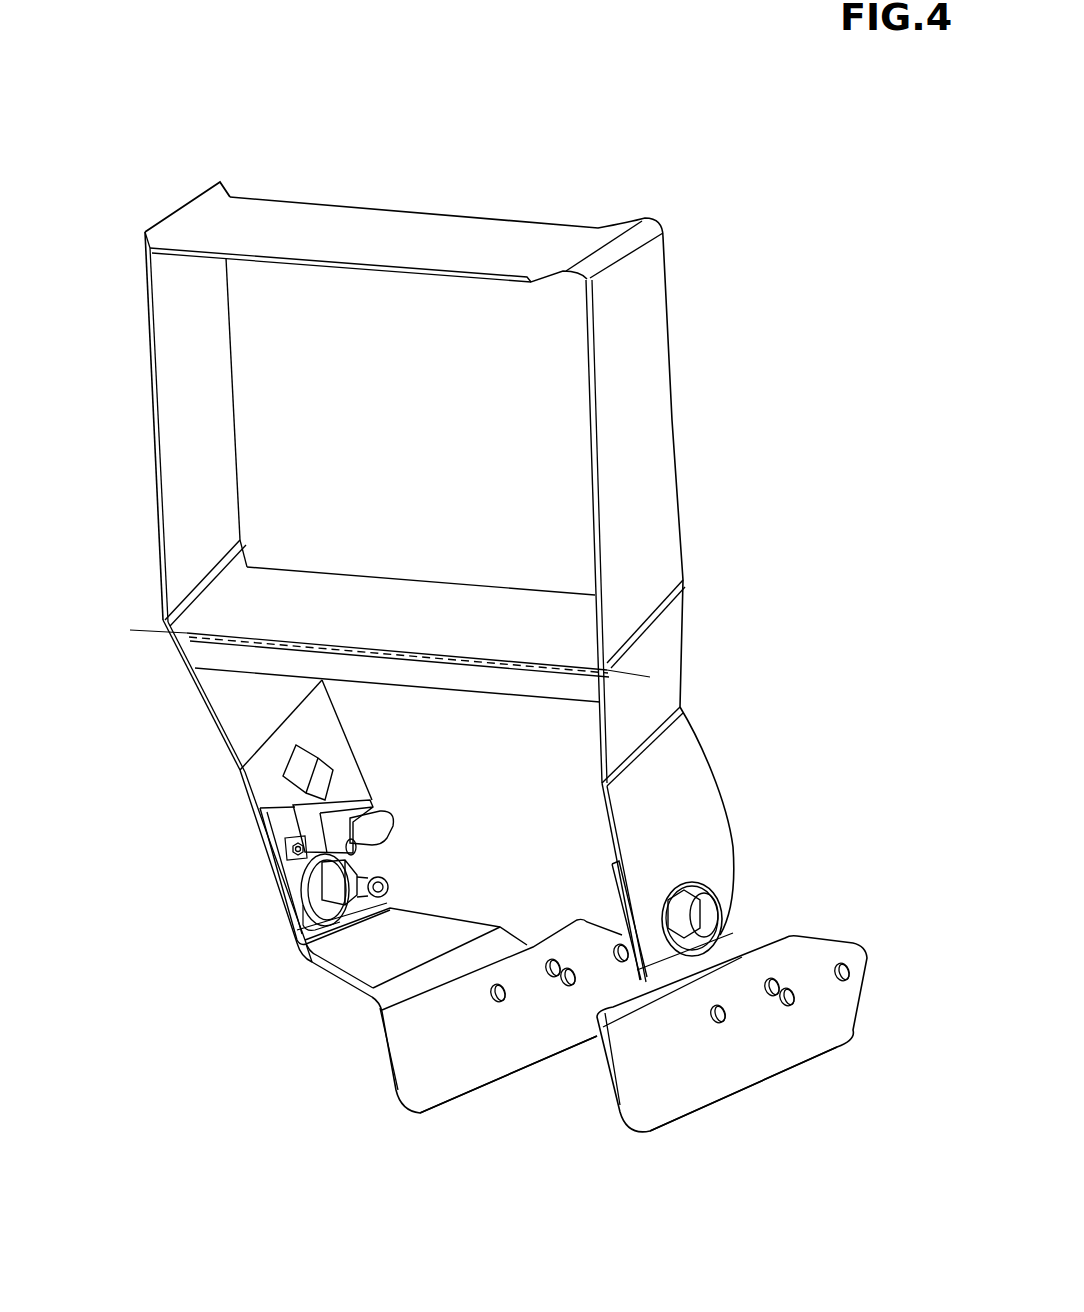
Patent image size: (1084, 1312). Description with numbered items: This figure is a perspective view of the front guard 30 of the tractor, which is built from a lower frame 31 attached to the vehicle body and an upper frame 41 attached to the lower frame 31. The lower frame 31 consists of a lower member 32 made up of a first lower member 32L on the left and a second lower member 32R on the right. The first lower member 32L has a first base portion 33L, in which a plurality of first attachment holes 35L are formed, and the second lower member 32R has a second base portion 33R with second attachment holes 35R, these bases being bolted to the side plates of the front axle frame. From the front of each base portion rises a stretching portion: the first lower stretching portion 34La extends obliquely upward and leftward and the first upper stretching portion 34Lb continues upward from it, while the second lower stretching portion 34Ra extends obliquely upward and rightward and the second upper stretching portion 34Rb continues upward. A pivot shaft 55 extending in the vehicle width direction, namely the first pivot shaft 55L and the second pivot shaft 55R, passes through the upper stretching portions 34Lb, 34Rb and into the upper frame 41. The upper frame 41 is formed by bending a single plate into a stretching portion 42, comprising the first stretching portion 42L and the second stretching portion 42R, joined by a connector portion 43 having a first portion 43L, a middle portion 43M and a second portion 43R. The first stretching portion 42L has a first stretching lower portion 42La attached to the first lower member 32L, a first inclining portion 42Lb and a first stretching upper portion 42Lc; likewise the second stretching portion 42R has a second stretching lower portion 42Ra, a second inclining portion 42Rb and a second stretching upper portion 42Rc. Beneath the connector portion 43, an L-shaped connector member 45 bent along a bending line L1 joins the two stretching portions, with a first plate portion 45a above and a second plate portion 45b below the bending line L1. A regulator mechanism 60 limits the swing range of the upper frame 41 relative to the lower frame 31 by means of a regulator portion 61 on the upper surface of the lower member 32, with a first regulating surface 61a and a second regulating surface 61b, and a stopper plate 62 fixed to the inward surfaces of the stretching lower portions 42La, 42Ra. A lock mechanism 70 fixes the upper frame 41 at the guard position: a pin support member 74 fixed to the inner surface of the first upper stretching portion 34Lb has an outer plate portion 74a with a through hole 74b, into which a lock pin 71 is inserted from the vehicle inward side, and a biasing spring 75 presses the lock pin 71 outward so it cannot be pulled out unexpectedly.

The front guard 30 is at (547, 177).
The lower frame 31 is at (830, 1061).
The lower member 32 is at (534, 1029).
The second lower member 32R is at (421, 1118).
The first lower member 32L is at (688, 1123).
The second base portion 33R is at (490, 1088).
The first base portion 33L is at (793, 1070).
The second lower stretching portion 34Ra is at (343, 980).
The second upper stretching portion 34Rb is at (292, 905).
The first lower stretching portion 34La is at (747, 960).
The first upper stretching portion 34Lb is at (615, 886).
The second attachment holes 35R is at (613, 960).
The first attachment holes 35L is at (790, 1000).
The upper frame 41 is at (678, 267).
The stretching portion 42 is at (461, 614).
The second stretching portion 42R is at (230, 343).
The first stretching portion 42L is at (676, 372).
The second stretching lower portion 42Ra is at (250, 800).
The second inclining portion 42Rb is at (207, 703).
The second stretching upper portion 42Rc is at (215, 422).
The first stretching lower portion 42La is at (683, 763).
The first inclining portion 42Lb is at (664, 632).
The first stretching upper portion 42Lc is at (656, 438).
The connector portion 43 is at (354, 202).
The second portion 43R is at (198, 210).
The middle portion 43M is at (406, 226).
The first portion 43L is at (607, 230).
The connector member 45 is at (386, 572).
The first plate portion 45a is at (467, 607).
The second plate portion 45b is at (515, 682).
The pivot shaft 55 is at (511, 932).
The second pivot shaft 55R is at (340, 925).
The first pivot shaft 55L is at (703, 915).
The regulator mechanism 60 is at (268, 791).
The regulator portion 61 is at (214, 809).
The first regulating surface 61a is at (263, 818).
The second regulating surface 61b is at (297, 793).
The stopper plate 62 is at (290, 767).
The lock mechanism 70 is at (395, 841).
The lock pin 71 is at (392, 826).
The pin support member 74 is at (266, 830).
The outer plate portion 74a is at (303, 888).
The through hole 74b is at (383, 810).
The biasing spring 75 is at (352, 800).
The bending line L1 is at (150, 625).